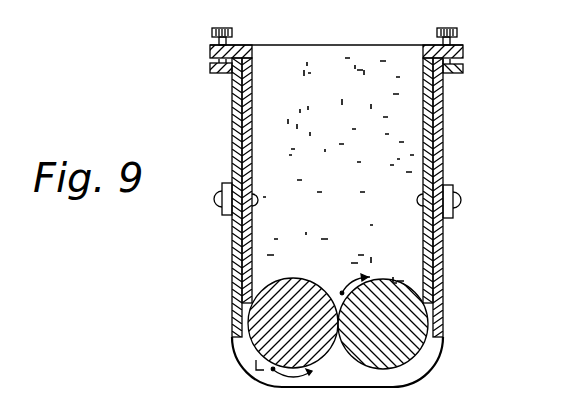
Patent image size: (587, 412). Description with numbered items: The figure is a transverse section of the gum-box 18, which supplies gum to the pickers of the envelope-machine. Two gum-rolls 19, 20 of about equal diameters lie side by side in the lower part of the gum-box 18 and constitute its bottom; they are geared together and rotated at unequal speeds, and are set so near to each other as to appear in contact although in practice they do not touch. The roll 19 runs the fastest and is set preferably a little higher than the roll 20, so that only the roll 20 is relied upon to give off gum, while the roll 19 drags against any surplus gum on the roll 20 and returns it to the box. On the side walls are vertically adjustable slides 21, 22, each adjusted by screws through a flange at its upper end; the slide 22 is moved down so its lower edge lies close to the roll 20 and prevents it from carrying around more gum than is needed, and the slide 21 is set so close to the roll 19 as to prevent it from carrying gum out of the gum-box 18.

The gum-box 18 is at (443, 143).
The gum-roll 19 is at (293, 318).
The gum-roll 20 is at (383, 314).
The slide 21 is at (252, 128).
The slide 22 is at (463, 50).